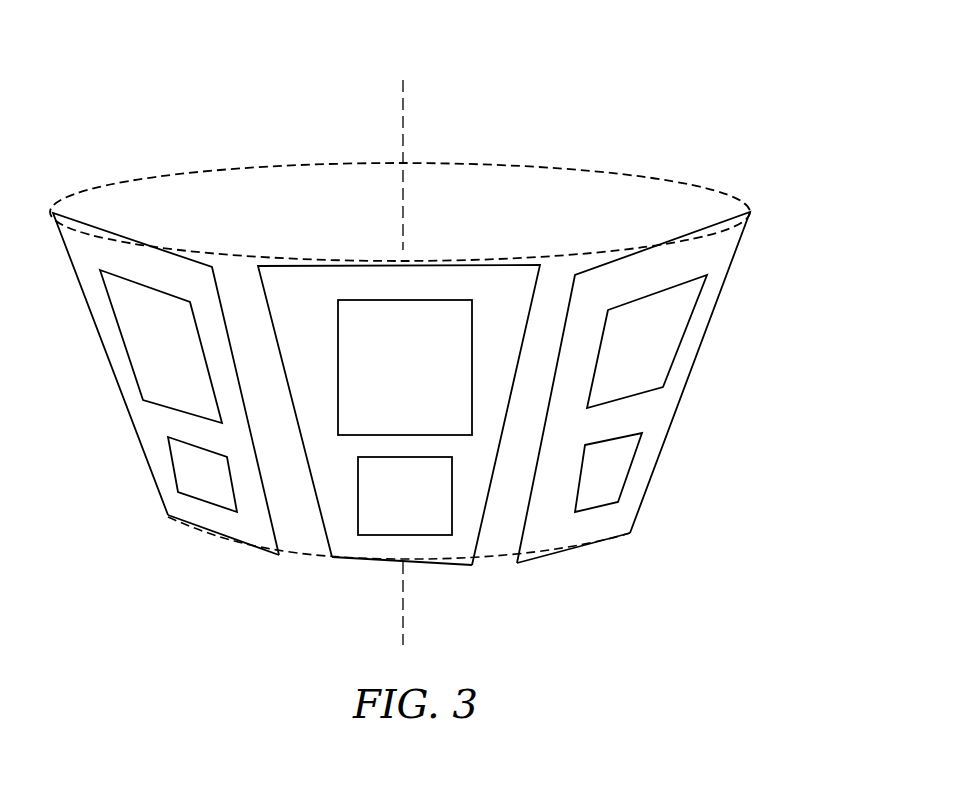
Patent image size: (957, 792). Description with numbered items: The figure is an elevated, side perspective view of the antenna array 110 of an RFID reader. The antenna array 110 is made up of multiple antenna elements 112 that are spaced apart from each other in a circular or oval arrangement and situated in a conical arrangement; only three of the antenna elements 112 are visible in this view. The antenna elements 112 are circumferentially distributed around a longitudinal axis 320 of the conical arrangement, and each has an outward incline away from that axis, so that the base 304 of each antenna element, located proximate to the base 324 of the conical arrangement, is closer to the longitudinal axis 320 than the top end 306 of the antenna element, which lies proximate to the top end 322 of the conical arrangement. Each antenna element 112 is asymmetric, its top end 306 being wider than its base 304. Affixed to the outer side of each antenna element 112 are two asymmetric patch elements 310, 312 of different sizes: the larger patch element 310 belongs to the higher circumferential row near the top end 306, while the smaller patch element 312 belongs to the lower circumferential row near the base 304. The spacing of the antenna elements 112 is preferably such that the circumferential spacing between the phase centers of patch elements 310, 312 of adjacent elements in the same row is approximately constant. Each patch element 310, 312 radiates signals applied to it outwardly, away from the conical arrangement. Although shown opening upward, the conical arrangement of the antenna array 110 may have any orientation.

The antenna array 110 is at (137, 124).
The antenna element 112 is at (183, 240).
The base of antenna element 304 is at (215, 534).
The top end of antenna element 306 is at (90, 224).
The patch element 310 is at (178, 352).
The patch element 312 is at (221, 487).
The longitudinal axis 320 is at (403, 147).
The top end of conical arrangement 322 is at (768, 205).
The base of conical arrangement 324 is at (650, 534).